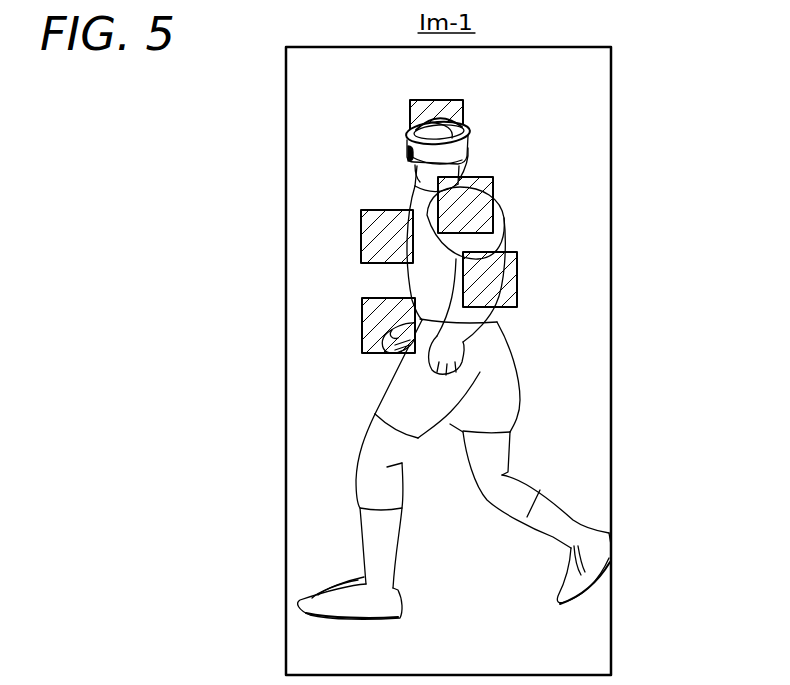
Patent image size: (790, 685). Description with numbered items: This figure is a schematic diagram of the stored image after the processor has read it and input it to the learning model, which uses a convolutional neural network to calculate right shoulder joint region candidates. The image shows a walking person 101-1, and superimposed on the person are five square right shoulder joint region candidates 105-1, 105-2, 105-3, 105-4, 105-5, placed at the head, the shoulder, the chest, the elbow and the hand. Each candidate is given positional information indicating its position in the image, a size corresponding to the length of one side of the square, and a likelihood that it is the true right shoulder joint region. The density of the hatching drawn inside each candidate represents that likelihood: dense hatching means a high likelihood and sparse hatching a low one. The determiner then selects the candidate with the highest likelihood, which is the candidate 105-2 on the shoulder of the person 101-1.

The person 101-1 is at (413, 280).
The right shoulder joint region candidate 105-1 is at (410, 107).
The right shoulder joint region candidate 105-2 is at (493, 191).
The right shoulder joint region candidate 105-3 is at (362, 222).
The right shoulder joint region candidate 105-4 is at (517, 270).
The right shoulder joint region candidate 105-5 is at (362, 330).